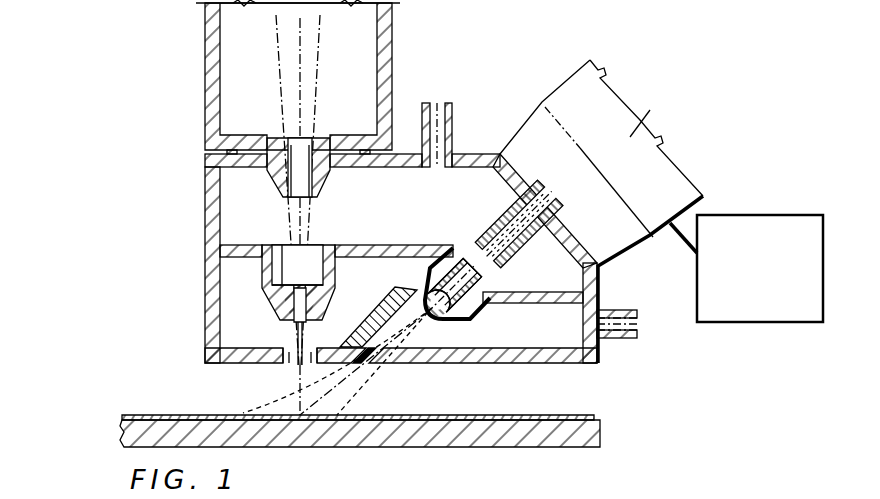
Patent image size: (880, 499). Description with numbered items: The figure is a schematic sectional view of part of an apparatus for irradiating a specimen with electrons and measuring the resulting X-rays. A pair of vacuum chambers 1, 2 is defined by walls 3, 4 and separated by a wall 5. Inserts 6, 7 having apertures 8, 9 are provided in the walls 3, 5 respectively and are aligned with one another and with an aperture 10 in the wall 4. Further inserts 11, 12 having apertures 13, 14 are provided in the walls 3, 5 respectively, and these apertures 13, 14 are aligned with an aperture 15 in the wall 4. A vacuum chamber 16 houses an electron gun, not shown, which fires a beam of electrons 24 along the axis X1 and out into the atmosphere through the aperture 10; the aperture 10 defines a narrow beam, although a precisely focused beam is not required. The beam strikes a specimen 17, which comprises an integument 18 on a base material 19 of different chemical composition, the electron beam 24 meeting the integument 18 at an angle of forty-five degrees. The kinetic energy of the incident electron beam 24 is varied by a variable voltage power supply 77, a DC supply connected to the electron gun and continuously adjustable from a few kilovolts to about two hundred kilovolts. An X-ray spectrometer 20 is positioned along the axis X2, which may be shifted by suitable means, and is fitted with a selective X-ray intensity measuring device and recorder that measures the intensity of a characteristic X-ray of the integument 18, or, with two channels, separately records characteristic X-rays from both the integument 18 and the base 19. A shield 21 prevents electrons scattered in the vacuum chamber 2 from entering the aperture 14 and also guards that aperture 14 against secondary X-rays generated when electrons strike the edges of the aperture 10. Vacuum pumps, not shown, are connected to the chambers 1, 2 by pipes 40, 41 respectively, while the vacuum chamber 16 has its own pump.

The vacuum chamber 1 is at (401, 241).
The vacuum chamber 2 is at (541, 335).
The wall 3 is at (461, 160).
The wall 4 is at (475, 352).
The wall 5 is at (378, 247).
The insert 6 is at (612, 254).
The insert 7 is at (478, 309).
The aperture 8 is at (506, 254).
The aperture 9 is at (448, 311).
The aperture 10 is at (378, 356).
The insert 11 is at (299, 171).
The insert 12 is at (293, 305).
The aperture 13 is at (305, 190).
The aperture 14 is at (306, 311).
The aperture 15 is at (290, 351).
The vacuum chamber 16 is at (572, 92).
The specimen 17 is at (354, 426).
The integument 18 is at (200, 414).
The base material 19 is at (276, 433).
The X-ray spectrometer 20 is at (208, 53).
The shield 21 is at (390, 302).
The electron beam 24 is at (405, 331).
The pipe 40 is at (425, 105).
The pipe 41 is at (615, 313).
The variable voltage power supply 77 is at (731, 323).
The axis X1 is at (649, 111).
The axis X2 is at (298, 62).